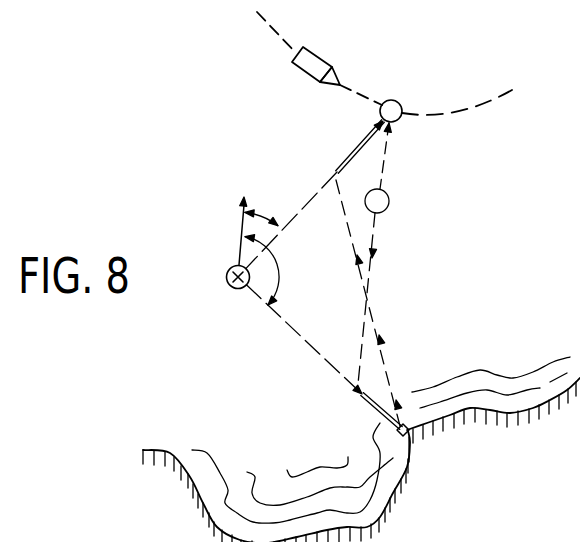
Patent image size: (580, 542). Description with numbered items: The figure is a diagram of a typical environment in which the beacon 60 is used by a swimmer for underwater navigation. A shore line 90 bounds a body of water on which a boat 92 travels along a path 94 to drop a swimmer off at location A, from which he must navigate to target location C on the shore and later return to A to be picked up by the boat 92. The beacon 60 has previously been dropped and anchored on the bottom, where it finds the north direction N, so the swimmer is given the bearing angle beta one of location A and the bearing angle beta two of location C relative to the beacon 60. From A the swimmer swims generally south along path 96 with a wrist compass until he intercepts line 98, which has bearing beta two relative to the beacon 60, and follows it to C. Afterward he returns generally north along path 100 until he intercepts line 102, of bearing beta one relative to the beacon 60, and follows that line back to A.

The beacon 60 is at (229, 286).
The shore line 90 is at (171, 448).
The boat 92 is at (330, 56).
The path 94 is at (364, 92).
The path 96 is at (378, 272).
The line 98 is at (290, 350).
The path 100 is at (344, 214).
The line 102 is at (334, 163).